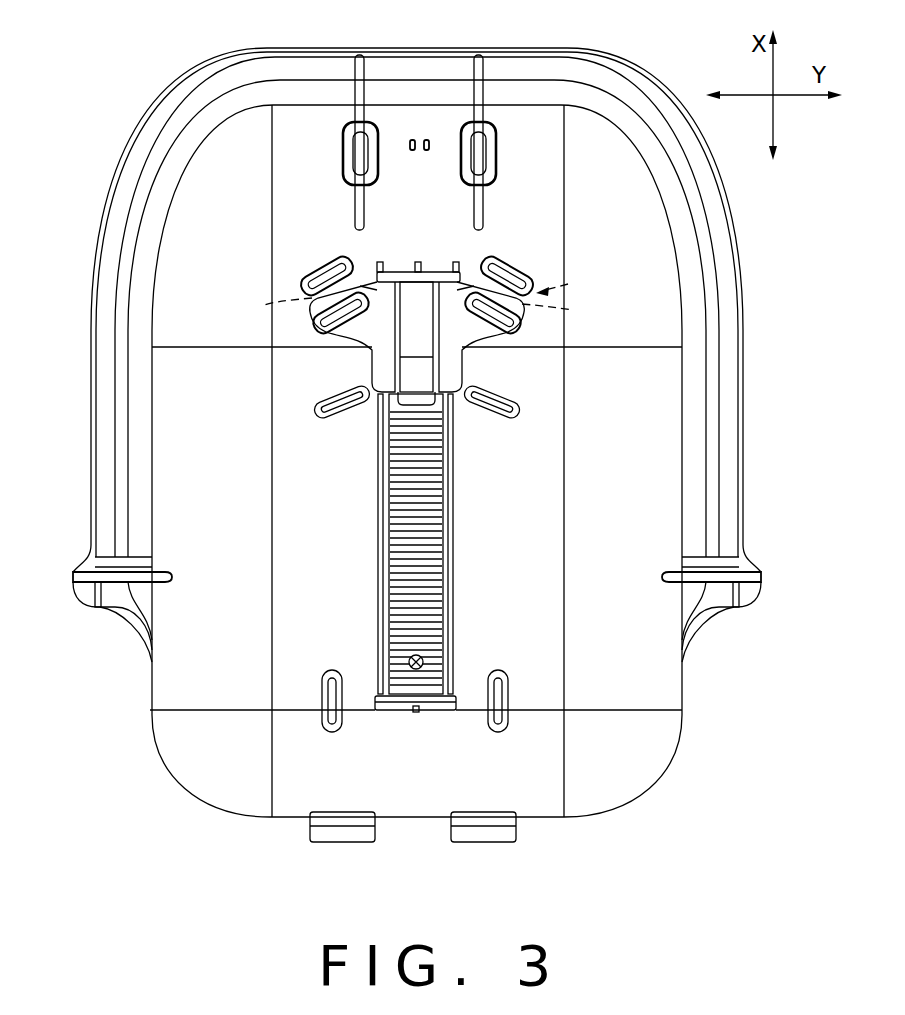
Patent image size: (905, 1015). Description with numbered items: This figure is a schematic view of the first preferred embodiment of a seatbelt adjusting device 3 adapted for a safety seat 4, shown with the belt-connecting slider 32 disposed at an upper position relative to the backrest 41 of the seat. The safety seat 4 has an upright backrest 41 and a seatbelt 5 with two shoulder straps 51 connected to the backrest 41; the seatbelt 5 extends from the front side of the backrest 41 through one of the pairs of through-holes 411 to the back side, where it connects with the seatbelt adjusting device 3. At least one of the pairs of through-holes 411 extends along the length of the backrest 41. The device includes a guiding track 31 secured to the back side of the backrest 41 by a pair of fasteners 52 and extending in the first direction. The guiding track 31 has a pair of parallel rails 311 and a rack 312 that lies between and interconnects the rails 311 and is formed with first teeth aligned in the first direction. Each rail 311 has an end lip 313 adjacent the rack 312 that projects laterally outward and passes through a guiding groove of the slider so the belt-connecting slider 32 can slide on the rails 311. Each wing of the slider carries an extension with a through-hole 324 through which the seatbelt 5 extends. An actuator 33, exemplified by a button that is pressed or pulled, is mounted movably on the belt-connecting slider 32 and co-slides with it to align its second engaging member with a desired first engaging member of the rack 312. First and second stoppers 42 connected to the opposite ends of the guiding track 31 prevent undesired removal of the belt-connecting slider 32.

The seatbelt adjusting device 3 is at (364, 582).
The safety seat 4 is at (75, 489).
The seatbelt 5 is at (568, 284).
The guiding track 31 is at (418, 544).
The belt-connecting slider 32 is at (470, 366).
The actuator 33 is at (418, 377).
The backrest 41 is at (173, 683).
The stoppers 42 is at (458, 266).
The shoulder straps 51 is at (262, 306).
The fasteners 52 is at (424, 659).
The rails 311 is at (378, 553).
The rack 312 is at (433, 507).
The end lip 313 is at (382, 630).
The through-hole 324 is at (313, 318).
The through-holes 411 is at (323, 273).